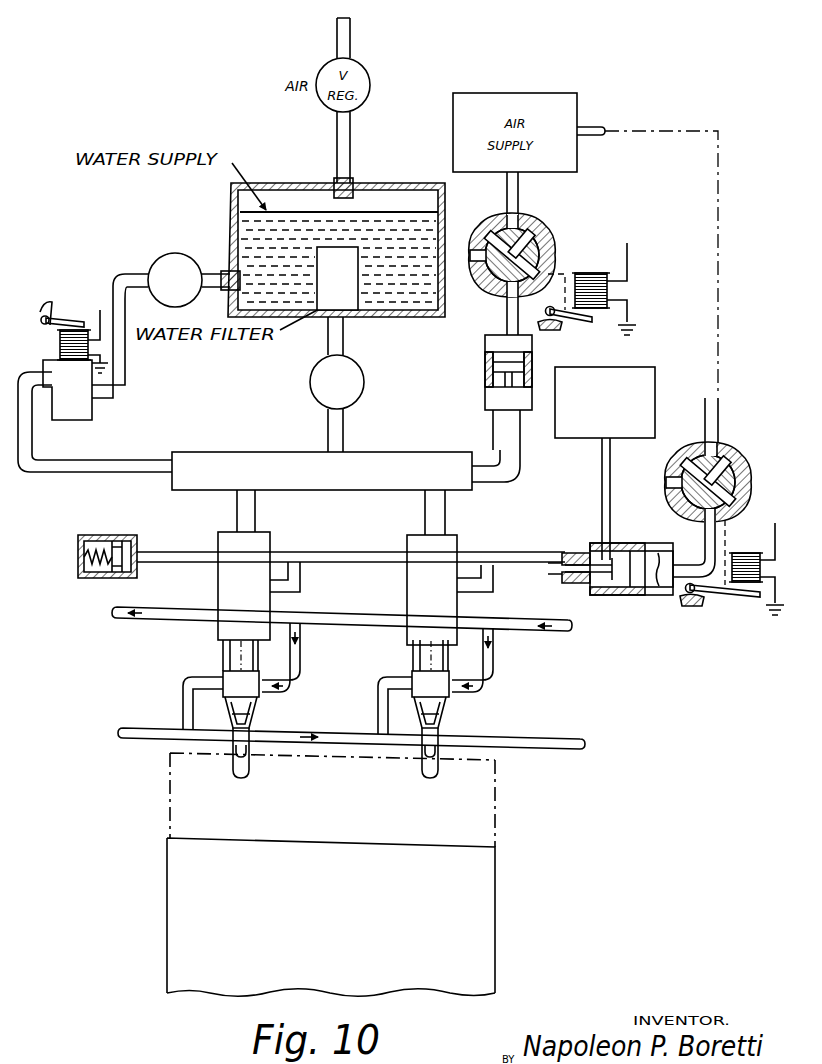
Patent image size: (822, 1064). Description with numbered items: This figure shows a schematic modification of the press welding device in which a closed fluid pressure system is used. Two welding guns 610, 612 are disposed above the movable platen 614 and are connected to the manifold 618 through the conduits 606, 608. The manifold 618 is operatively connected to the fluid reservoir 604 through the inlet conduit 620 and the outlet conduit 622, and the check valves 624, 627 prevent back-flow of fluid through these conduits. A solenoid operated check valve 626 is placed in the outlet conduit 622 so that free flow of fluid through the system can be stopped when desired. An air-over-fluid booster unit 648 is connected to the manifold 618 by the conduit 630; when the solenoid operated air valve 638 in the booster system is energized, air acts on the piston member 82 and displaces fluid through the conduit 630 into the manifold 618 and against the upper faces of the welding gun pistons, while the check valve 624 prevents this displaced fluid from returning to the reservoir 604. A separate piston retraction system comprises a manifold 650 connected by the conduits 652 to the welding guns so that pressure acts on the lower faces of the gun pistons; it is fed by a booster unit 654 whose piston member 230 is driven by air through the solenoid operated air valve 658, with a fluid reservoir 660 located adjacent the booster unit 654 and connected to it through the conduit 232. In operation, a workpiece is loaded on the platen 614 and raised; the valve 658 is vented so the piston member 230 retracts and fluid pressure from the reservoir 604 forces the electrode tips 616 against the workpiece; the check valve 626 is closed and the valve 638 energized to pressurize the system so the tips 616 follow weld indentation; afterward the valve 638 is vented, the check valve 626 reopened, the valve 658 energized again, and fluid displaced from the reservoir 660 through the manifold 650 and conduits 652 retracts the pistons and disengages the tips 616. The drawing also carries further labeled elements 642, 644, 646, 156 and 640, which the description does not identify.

The fluid reservoir 604 is at (392, 198).
The check valve 627 is at (175, 253).
The solenoid operated check valve 626 is at (92, 395).
The outlet conduit 622 is at (103, 468).
The check valve 624 is at (310, 382).
The inlet conduit 620 is at (344, 430).
The manifold 618 is at (250, 455).
The conduit 606 is at (256, 510).
The conduit 608 is at (445, 516).
The welding gun 610 is at (226, 530).
The welding gun 612 is at (414, 533).
The manifold 650 is at (345, 552).
The conduits 652 is at (300, 586).
The air line 642 is at (162, 618).
The branch air line 644 is at (300, 651).
The nozzle fitting 646 is at (223, 680).
The nozzle 156 is at (262, 722).
The electrode tips 616 is at (235, 778).
The return line 640 is at (160, 740).
The movable platen 614 is at (473, 866).
The conduit 630 is at (496, 466).
The air-over-fluid booster unit 648 is at (492, 398).
The piston member 82 is at (492, 362).
The solenoid operated air valve 638 is at (546, 230).
The solenoid operated air valve 658 is at (733, 452).
The fluid reservoir 660 is at (638, 372).
The conduit 232 is at (610, 492).
The piston member 230 is at (643, 543).
The booster unit 654 is at (668, 596).